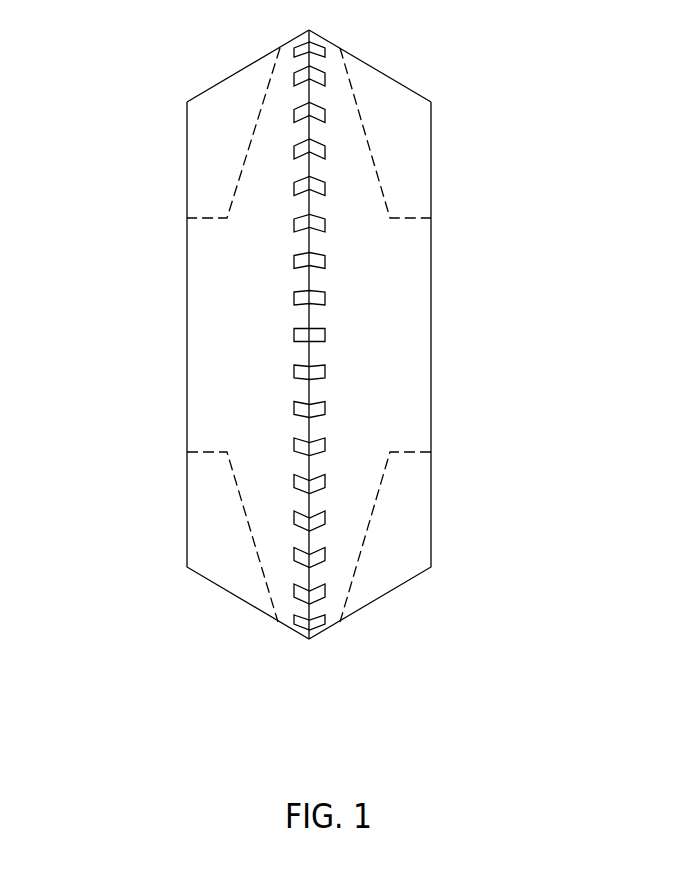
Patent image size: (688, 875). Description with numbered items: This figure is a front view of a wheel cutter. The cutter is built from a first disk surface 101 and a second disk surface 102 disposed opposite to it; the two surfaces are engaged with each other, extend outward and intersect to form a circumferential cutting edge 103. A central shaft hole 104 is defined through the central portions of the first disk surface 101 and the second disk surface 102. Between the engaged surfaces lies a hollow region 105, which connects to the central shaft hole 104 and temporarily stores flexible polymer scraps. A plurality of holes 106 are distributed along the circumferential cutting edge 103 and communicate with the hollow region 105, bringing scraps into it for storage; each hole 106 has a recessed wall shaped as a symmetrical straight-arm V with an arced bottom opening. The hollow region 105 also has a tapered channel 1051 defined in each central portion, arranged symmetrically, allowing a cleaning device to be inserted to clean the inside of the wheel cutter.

The first disk surface 101 is at (212, 123).
The second disk surface 102 is at (405, 135).
The circumferential cutting edge 103 is at (311, 166).
The central shaft hole 104 is at (195, 337).
The hollow region 105 is at (337, 493).
The tapered channel 1051 is at (253, 148).
The hole 106 is at (298, 408).